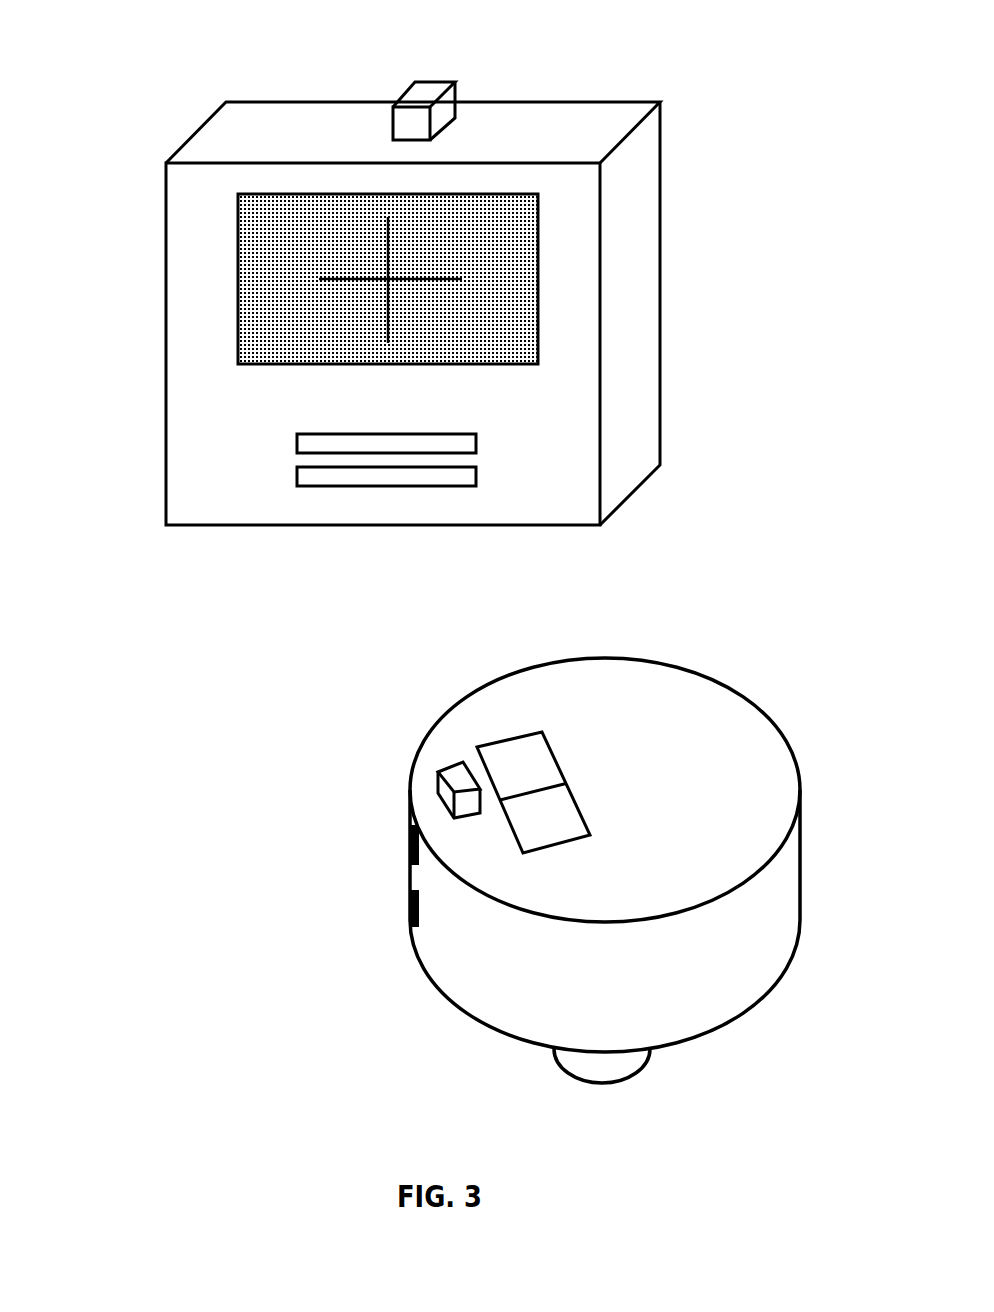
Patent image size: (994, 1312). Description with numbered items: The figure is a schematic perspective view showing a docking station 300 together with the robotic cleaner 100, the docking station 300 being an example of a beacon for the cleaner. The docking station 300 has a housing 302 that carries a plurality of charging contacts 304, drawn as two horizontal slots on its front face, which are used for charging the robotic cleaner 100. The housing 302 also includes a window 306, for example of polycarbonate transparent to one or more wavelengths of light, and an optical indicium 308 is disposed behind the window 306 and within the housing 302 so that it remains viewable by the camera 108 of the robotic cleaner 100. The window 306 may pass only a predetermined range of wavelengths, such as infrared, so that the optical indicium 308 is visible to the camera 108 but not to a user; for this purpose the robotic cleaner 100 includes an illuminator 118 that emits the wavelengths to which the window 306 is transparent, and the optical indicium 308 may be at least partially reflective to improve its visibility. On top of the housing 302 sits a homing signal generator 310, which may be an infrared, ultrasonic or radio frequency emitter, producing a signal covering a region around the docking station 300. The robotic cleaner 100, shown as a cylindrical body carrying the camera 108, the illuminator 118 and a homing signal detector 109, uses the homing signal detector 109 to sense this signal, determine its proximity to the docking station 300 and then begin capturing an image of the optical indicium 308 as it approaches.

The docking station 300 is at (118, 59).
The housing 302 is at (166, 312).
The charging contacts 304 is at (295, 477).
The window 306 is at (252, 282).
The optical indicium 308 is at (308, 198).
The homing signal generator 310 is at (417, 82).
The robotic cleaner 100 is at (392, 682).
The camera 108 is at (412, 842).
The homing signal detector 109 is at (440, 772).
The illuminator 118 is at (412, 903).